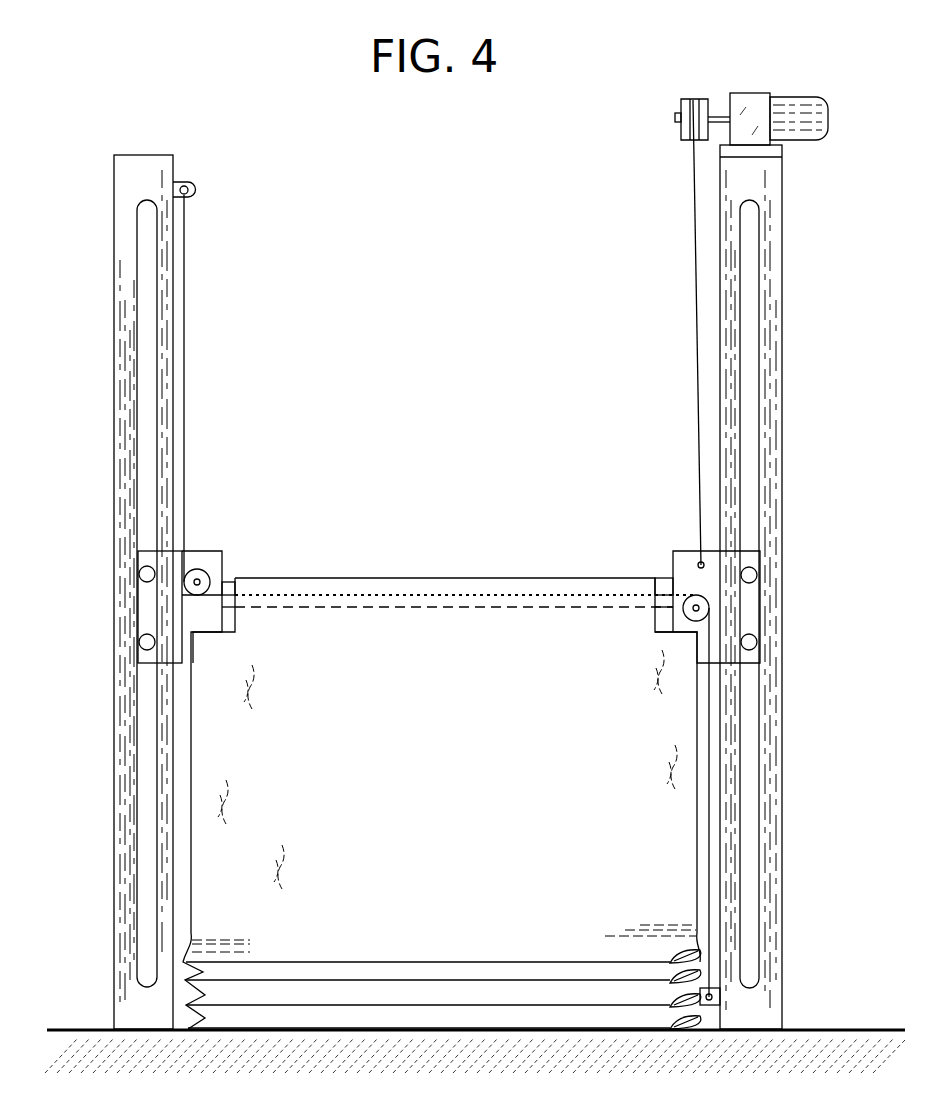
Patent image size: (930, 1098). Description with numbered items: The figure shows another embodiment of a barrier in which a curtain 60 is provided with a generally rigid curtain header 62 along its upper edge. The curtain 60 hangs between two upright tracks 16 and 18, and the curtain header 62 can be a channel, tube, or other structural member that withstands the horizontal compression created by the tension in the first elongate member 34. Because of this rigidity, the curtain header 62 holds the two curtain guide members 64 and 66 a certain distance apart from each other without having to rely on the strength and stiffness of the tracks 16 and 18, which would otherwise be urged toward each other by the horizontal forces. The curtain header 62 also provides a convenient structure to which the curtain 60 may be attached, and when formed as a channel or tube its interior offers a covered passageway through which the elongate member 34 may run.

The track 16 is at (114, 316).
The track 18 is at (781, 460).
The first elongate member 34 is at (186, 325).
The curtain 60 is at (448, 788).
The curtain header 62 is at (230, 578).
The curtain guide member 64 is at (197, 552).
The curtain guide member 66 is at (685, 550).